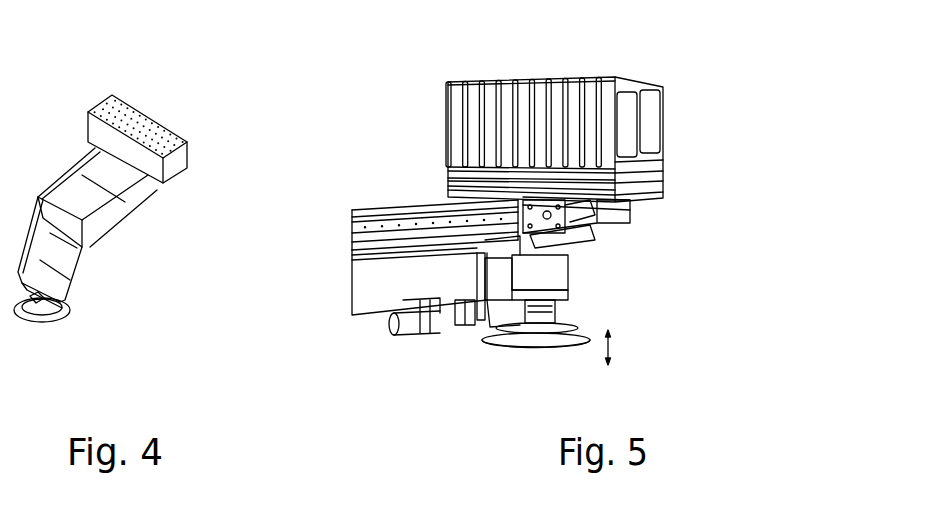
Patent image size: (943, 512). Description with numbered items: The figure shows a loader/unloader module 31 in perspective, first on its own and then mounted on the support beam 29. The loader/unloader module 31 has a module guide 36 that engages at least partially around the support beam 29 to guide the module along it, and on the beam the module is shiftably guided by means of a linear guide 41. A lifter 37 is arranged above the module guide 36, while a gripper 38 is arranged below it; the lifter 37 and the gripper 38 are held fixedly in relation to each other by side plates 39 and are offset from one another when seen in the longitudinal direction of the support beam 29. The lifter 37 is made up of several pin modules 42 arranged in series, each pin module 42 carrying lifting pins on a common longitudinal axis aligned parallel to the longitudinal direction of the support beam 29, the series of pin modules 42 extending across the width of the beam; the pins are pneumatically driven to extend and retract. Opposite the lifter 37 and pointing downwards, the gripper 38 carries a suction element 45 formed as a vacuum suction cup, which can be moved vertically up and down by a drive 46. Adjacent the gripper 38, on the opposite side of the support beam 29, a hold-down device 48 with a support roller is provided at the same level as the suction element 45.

In FIG. 5, the support beam 29 is at (367, 284).
In FIG. 4, the loader/unloader module 31 is at (197, 218).
In FIG. 4, the module guide 36 is at (103, 222).
In FIG. 4, the lifter 37 is at (202, 152).
In FIG. 5, the lifter 37 is at (675, 112).
In FIG. 4, the gripper 38 is at (57, 333).
In FIG. 5, the gripper 38 is at (527, 360).
In FIG. 4, the side plates 39 is at (92, 247).
In FIG. 5, the linear guide 41 is at (380, 208).
In FIG. 5, the pin modules 42 is at (615, 72).
In FIG. 4, the suction element 45 is at (68, 315).
In FIG. 5, the suction element 45 is at (567, 346).
In FIG. 5, the drive 46 is at (553, 272).
In FIG. 5, the hold-down device 48 is at (390, 340).